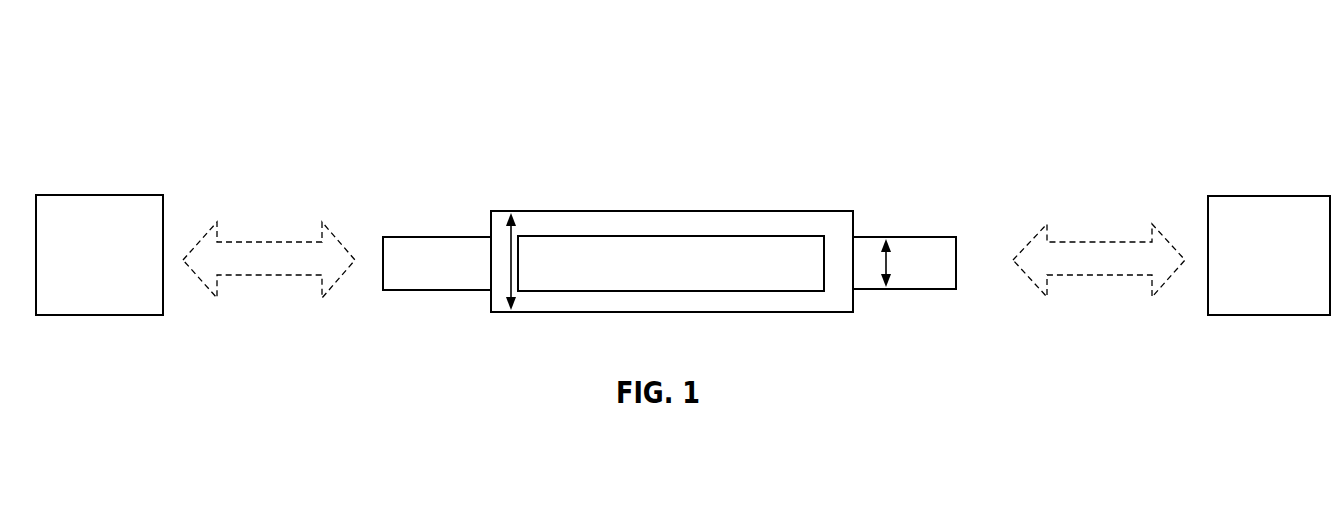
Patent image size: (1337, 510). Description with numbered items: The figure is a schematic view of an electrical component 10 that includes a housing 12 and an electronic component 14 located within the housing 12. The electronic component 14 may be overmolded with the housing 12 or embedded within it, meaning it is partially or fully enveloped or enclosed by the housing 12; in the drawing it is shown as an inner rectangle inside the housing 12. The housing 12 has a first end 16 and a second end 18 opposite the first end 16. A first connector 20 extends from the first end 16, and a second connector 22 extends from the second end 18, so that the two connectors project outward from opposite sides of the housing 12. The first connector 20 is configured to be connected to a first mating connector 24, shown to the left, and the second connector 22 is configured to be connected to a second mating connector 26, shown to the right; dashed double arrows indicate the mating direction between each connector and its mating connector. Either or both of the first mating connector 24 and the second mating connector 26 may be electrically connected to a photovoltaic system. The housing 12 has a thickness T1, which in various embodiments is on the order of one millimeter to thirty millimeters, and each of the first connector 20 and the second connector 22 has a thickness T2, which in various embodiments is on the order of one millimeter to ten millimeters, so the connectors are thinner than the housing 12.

The electrical component 10 is at (560, 50).
The housing 12 is at (757, 223).
The electronic component 14 is at (658, 232).
The first end 16 is at (488, 230).
The second end 18 is at (855, 222).
The first connector 20 is at (408, 250).
The second connector 22 is at (928, 257).
The first mating connector 24 is at (117, 223).
The second mating connector 26 is at (1273, 230).
The thickness of housing T1 is at (510, 262).
The thickness of connector T2 is at (888, 262).